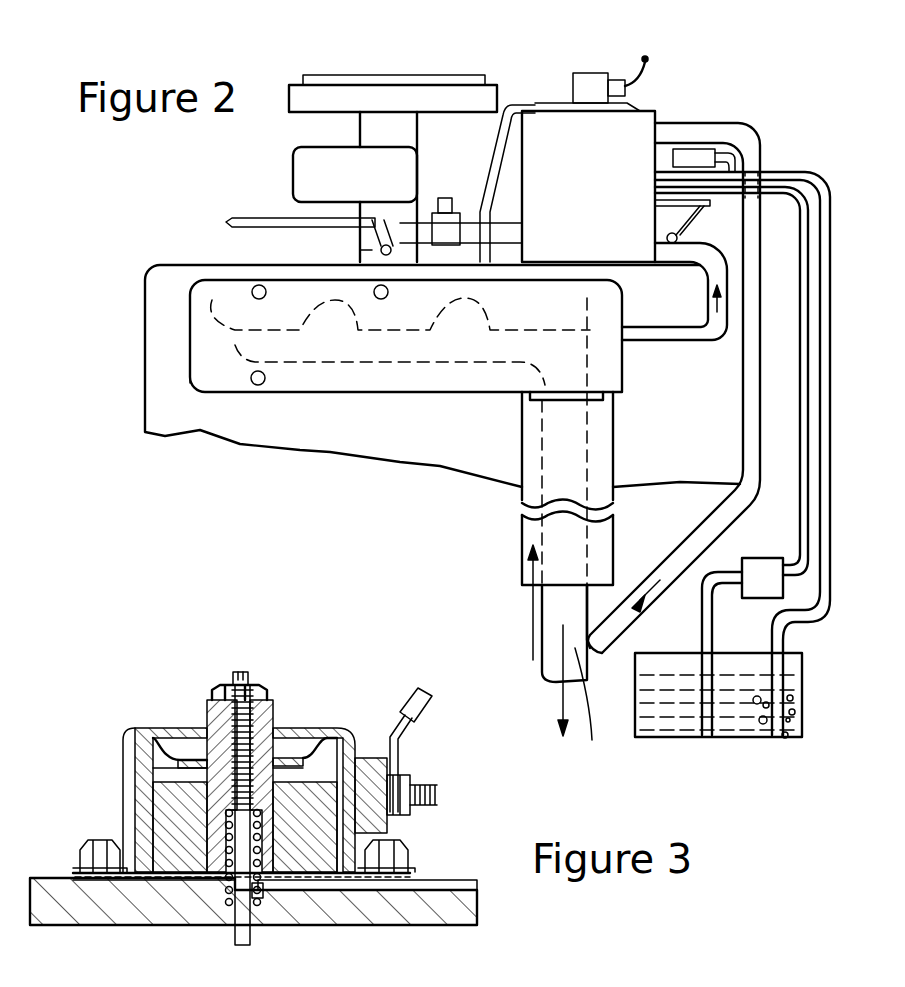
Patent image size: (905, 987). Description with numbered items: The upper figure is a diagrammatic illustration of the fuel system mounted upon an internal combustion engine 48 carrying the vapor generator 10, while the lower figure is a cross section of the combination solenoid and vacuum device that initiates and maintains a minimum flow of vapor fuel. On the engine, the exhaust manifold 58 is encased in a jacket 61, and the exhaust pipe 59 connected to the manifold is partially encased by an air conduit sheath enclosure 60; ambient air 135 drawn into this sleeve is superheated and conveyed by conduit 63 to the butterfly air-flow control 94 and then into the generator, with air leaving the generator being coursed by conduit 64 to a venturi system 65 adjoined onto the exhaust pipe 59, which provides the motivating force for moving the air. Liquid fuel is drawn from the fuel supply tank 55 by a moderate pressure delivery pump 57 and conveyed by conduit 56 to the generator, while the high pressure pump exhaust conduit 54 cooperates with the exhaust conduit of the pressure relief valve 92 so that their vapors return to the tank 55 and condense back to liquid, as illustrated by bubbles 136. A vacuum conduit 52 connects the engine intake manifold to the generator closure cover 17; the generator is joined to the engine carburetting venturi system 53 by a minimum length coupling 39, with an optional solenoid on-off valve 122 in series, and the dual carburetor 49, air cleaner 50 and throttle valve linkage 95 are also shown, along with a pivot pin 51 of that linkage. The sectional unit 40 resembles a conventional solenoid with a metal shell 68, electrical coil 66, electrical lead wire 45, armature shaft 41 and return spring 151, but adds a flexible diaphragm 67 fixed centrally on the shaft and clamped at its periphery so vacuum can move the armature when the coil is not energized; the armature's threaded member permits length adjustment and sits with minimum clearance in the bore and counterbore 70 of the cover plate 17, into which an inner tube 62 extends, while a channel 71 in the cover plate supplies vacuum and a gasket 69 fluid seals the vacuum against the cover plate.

In FIG. 2, the vapor generator 10 is at (676, 114).
In FIG. 2, the generator closure cover 17 is at (562, 100).
In FIG. 3, the generator closure cover 17 is at (102, 922).
In FIG. 2, the minimum length coupling 39 is at (472, 230).
In FIG. 2, the solenoid / actuator housing 40 is at (598, 78).
In FIG. 3, the solenoid / actuator housing 40 is at (306, 718).
In FIG. 3, the armature shaft 41 is at (233, 678).
In FIG. 2, the electrical lead wire 45 is at (650, 64).
In FIG. 3, the electrical lead wire 45 is at (387, 732).
In FIG. 2, the internal combustion engine 48 is at (165, 315).
In FIG. 2, the dual carburetor 49 is at (307, 200).
In FIG. 2, the air cleaner 50 is at (352, 92).
In FIG. 2, the pivot pin 51 is at (367, 252).
In FIG. 2, the vacuum conduit 52 is at (513, 105).
In FIG. 2, the engine carburetting venturi system 53 is at (390, 230).
In FIG. 2, the high pressure pump exhaust conduit 54 is at (805, 172).
In FIG. 2, the liquid fuel supply tank 55 is at (673, 720).
In FIG. 2, the conduit 56 is at (806, 520).
In FIG. 2, the moderate pressure delivery pump 57 is at (765, 567).
In FIG. 2, the exhaust manifold 58 is at (200, 355).
In FIG. 2, the exhaust pipe 59 is at (548, 665).
In FIG. 2, the air conduit sheath enclosure 60 is at (525, 470).
In FIG. 2, the jacket 61 is at (192, 383).
In FIG. 2, the inner tube 62 is at (600, 585).
In FIG. 2, the conduit 63 is at (660, 338).
In FIG. 2, the conduit 64 is at (752, 142).
In FIG. 2, the venturi system 65 is at (580, 662).
In FIG. 3, the electrical coil 66 is at (170, 825).
In FIG. 3, the flexible diaphragm 67 is at (178, 752).
In FIG. 3, the metal shell 68 is at (125, 745).
In FIG. 3, the gasket 69 is at (405, 872).
In FIG. 3, the bore and counterbore 70 is at (233, 925).
In FIG. 3, the channel 71 is at (478, 893).
In FIG. 2, the pressure relief valve 92 is at (692, 157).
In FIG. 2, the butterfly air-flow control 94 is at (678, 233).
In FIG. 2, the throttle valve linkage 95 is at (240, 222).
In FIG. 2, the solenoid on-off valve 122 is at (437, 226).
In FIG. 2, the ambient air 135 is at (252, 292).
In FIG. 2, the bubbles 136 is at (760, 710).
In FIG. 3, the return spring 151 is at (264, 898).